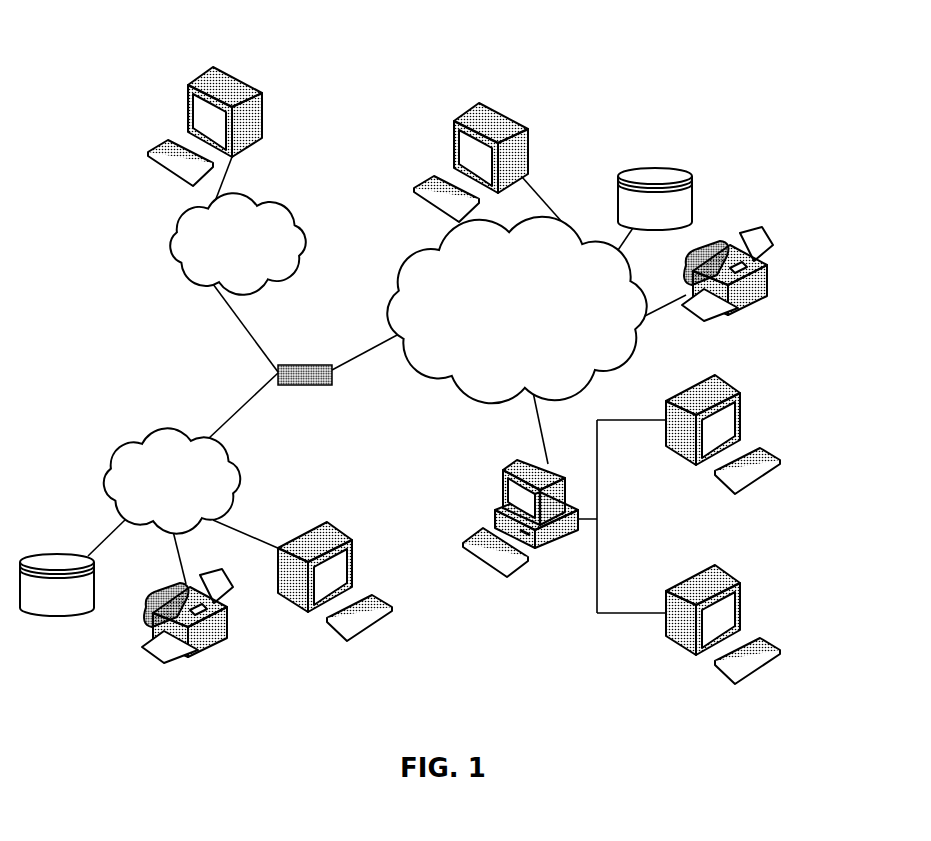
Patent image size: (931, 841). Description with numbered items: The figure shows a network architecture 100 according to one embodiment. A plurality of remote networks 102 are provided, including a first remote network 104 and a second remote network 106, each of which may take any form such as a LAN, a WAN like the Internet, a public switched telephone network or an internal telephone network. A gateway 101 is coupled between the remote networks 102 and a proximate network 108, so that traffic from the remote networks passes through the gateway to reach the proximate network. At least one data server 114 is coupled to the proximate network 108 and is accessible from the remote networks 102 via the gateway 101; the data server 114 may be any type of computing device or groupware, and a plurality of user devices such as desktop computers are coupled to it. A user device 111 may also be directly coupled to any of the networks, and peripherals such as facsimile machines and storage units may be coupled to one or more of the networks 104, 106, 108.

The network architecture 100 is at (138, 56).
The gateway 101 is at (290, 365).
The remote networks 102 is at (160, 290).
The first remote network 104 is at (108, 461).
The second remote network 106 is at (297, 222).
The proximate network 108 is at (607, 367).
The user device 111 is at (528, 131).
The data server 114 is at (503, 477).